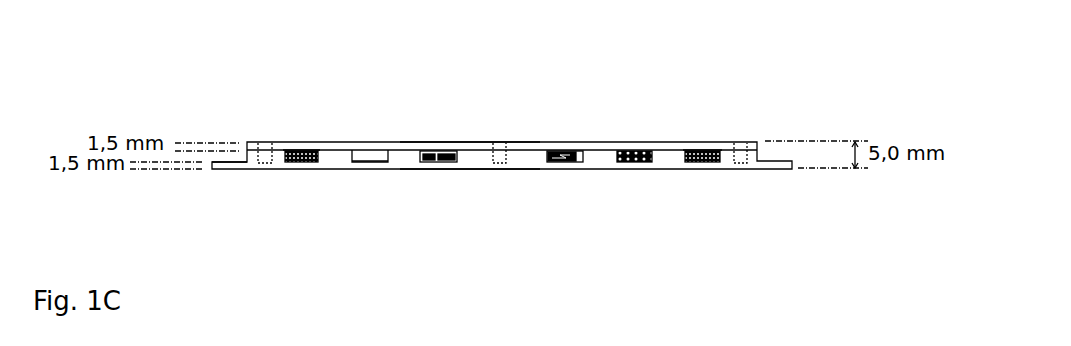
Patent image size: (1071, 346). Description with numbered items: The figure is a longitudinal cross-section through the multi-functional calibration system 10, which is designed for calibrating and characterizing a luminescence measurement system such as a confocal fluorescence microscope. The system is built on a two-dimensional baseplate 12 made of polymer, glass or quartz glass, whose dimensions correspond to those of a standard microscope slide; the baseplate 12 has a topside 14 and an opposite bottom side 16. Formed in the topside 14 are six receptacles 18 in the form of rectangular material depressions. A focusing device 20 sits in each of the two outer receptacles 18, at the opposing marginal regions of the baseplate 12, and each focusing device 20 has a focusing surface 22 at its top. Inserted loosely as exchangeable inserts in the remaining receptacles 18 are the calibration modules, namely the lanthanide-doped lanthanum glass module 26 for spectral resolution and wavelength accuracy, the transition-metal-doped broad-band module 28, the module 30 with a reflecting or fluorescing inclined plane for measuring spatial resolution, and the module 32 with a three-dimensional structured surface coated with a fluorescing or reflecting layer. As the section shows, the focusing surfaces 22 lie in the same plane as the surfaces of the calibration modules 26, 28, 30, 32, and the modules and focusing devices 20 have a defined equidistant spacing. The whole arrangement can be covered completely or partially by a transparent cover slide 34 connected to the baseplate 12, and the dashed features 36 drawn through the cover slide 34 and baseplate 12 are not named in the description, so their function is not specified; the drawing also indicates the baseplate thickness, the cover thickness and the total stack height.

The multi-functional calibration system 10 is at (218, 115).
The baseplate 12 is at (253, 163).
The topside 14 is at (471, 148).
The bottom side 16 is at (474, 170).
The receptacles 18 is at (313, 161).
The focusing device 20 is at (298, 162).
The focusing surface 22 is at (295, 151).
The calibration module 26 is at (378, 162).
The calibration module 28 is at (437, 162).
The calibration module 30 is at (567, 162).
The calibration module 32 is at (635, 162).
The cover slide 34 is at (337, 143).
The through-hole connection 36 is at (500, 145).